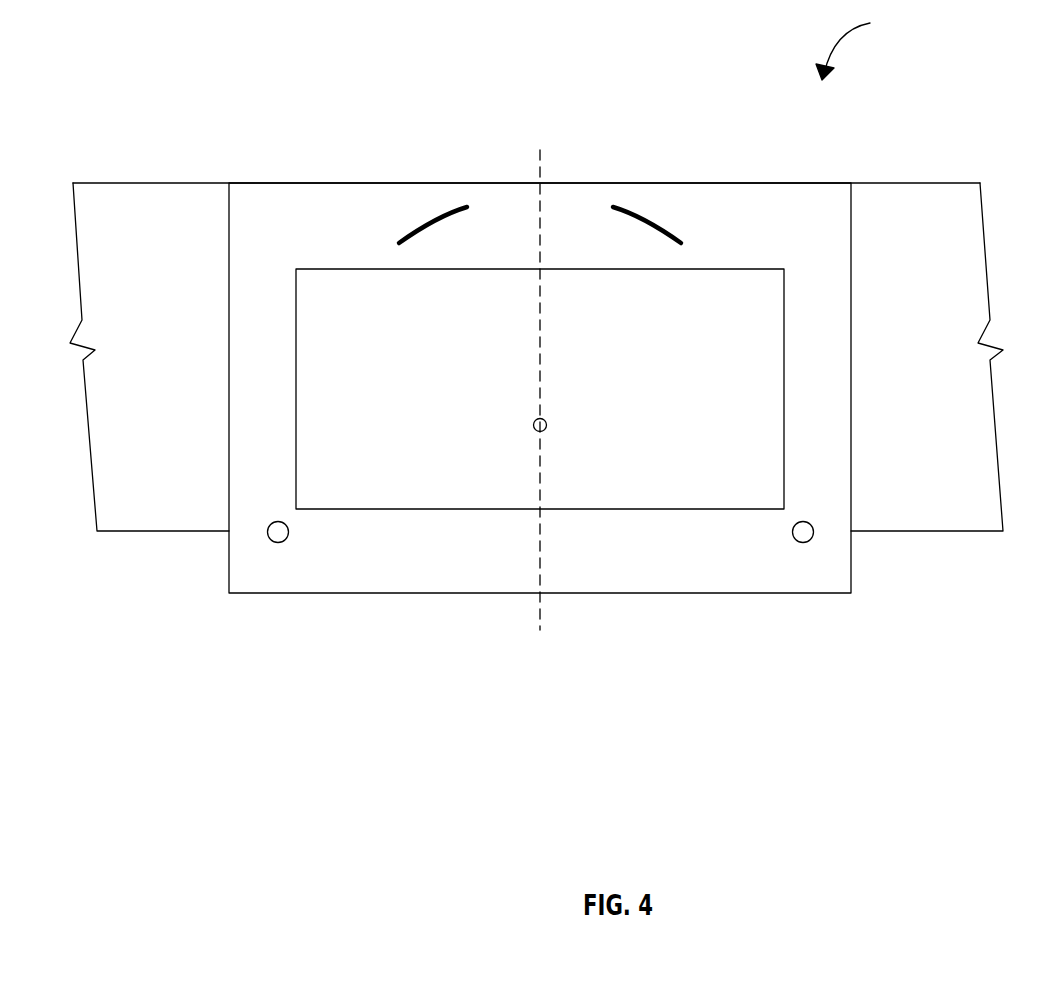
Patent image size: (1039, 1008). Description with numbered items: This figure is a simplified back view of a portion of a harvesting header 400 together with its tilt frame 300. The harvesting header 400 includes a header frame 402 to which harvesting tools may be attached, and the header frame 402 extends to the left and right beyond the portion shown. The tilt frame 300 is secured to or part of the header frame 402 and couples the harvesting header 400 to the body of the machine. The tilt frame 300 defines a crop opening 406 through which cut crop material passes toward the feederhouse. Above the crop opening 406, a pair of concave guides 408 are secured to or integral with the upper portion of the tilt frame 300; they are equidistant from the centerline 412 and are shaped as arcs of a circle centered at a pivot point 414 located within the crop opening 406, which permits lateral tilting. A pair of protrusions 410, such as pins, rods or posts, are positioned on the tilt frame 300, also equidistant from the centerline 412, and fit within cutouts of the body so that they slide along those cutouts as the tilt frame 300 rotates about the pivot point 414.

The harvesting header 400 is at (862, 43).
The header frame 402 is at (153, 207).
The tilt frame 300 is at (273, 215).
The crop opening 406 is at (692, 482).
The guides 408 is at (440, 217).
The protrusions 410 is at (269, 539).
The centerline 412 is at (537, 616).
The pivot point 414 is at (533, 428).